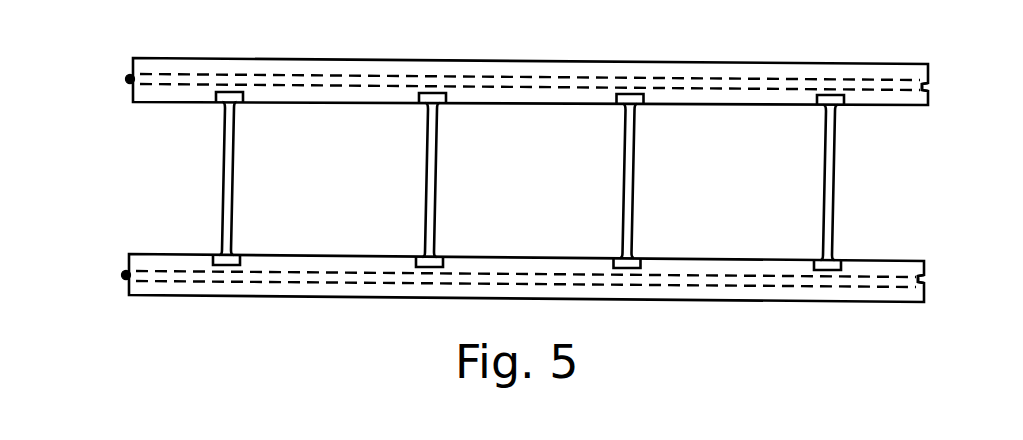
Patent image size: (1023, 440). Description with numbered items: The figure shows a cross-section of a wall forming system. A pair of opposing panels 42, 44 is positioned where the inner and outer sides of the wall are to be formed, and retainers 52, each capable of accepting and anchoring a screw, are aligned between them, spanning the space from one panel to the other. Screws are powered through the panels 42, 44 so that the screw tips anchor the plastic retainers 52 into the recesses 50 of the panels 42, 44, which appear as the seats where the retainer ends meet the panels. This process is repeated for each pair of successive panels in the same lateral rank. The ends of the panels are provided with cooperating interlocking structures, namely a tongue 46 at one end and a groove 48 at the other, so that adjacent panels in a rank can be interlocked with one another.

The panel 42 is at (523, 61).
The panel 44 is at (730, 300).
The tongue 46 is at (128, 80).
The groove 48 is at (929, 86).
The recess 50 is at (440, 106).
The retainer 52 is at (435, 190).